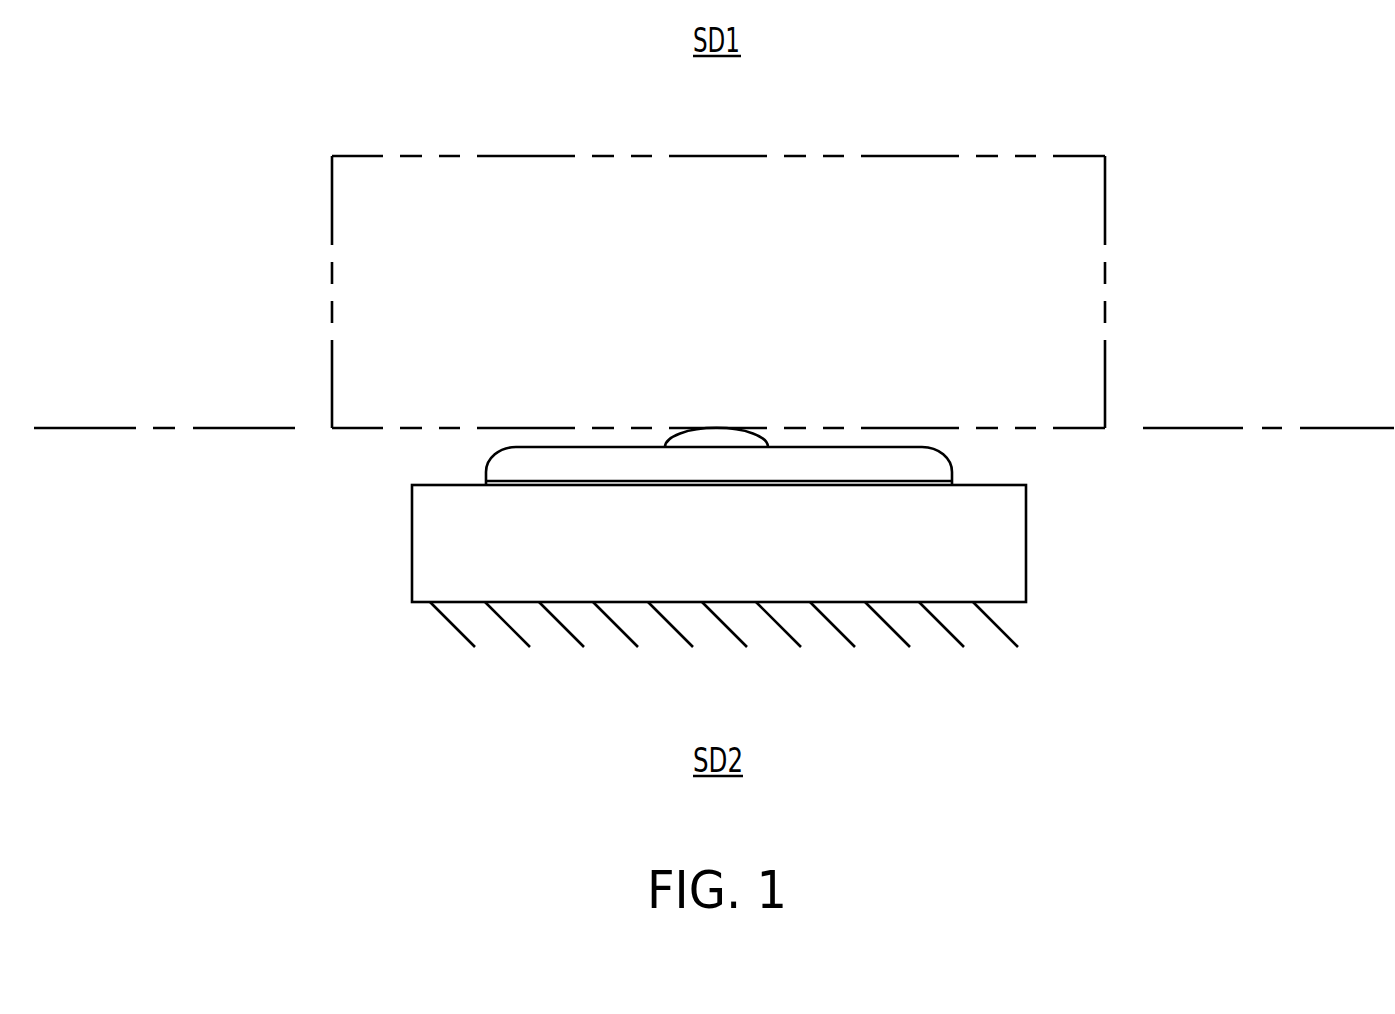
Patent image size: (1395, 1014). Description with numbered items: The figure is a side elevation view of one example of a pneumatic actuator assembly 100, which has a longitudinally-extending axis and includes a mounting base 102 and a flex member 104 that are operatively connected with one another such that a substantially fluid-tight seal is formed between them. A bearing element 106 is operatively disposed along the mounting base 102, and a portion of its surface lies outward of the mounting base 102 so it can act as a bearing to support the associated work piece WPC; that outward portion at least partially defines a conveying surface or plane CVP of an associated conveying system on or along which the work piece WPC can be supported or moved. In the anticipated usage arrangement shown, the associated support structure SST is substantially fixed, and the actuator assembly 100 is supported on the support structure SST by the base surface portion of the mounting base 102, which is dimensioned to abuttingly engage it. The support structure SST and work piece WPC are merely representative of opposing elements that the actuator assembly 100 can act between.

The pneumatic actuator assembly 100 is at (732, 334).
The mounting base 102 is at (398, 556).
The flex member 104 is at (473, 458).
The bearing element 106 is at (672, 418).
The associated work piece WPC is at (1118, 212).
The conveying surface or plane CVP is at (213, 428).
The associated support structure SST is at (421, 637).